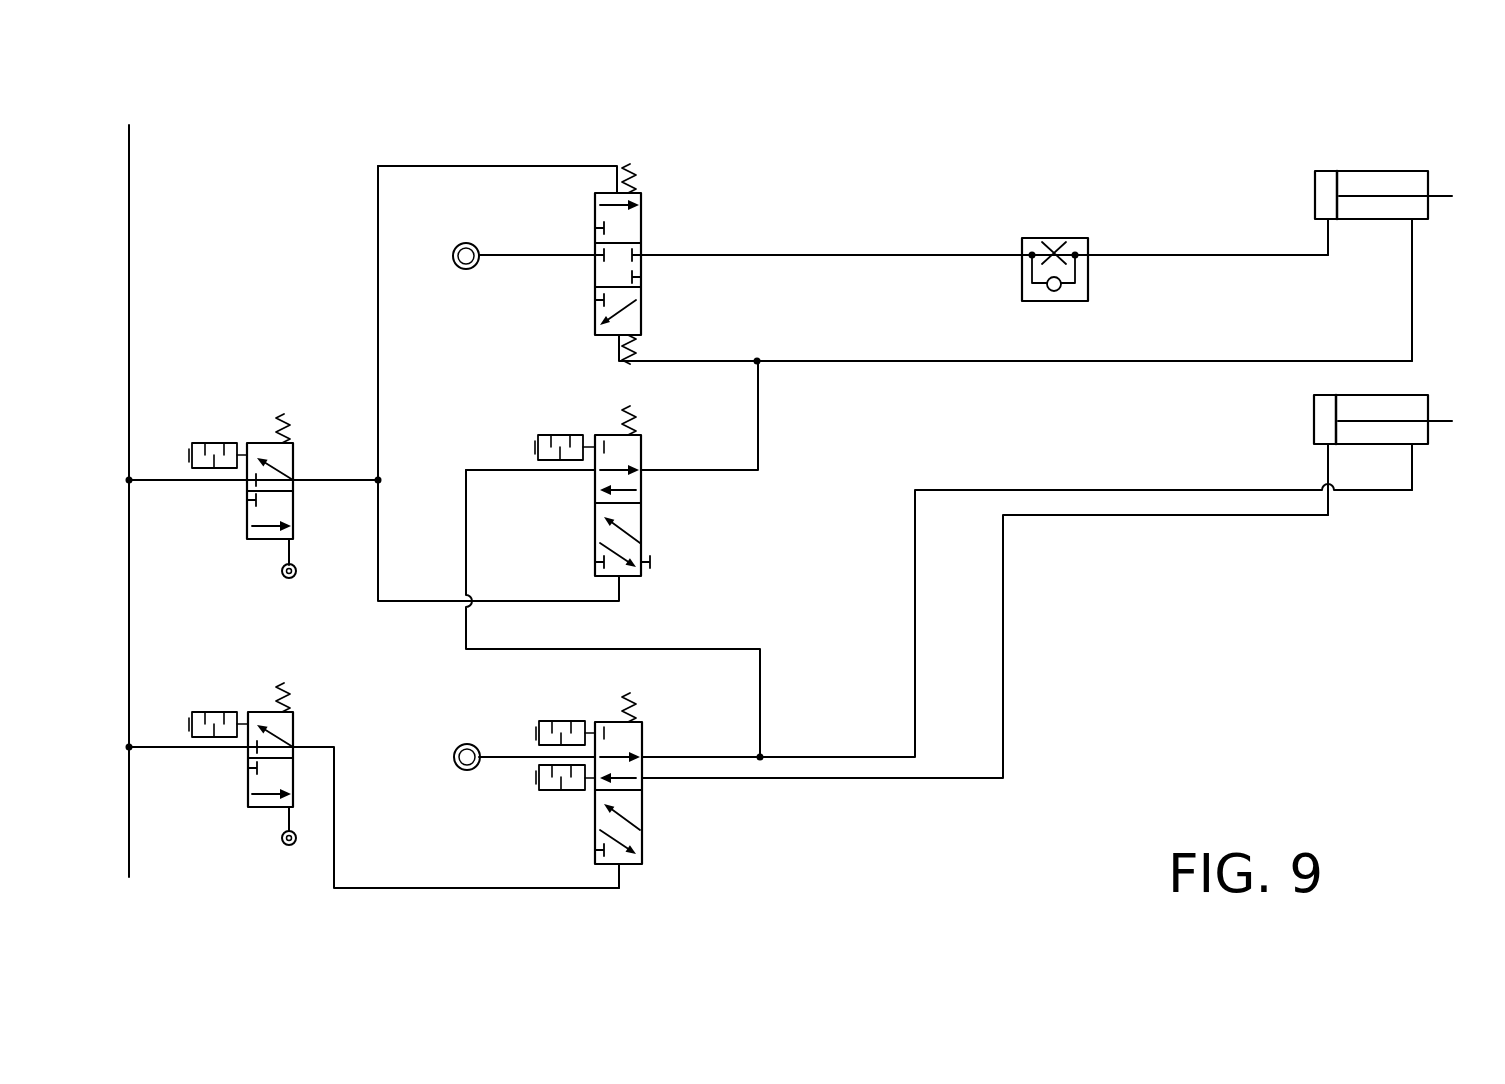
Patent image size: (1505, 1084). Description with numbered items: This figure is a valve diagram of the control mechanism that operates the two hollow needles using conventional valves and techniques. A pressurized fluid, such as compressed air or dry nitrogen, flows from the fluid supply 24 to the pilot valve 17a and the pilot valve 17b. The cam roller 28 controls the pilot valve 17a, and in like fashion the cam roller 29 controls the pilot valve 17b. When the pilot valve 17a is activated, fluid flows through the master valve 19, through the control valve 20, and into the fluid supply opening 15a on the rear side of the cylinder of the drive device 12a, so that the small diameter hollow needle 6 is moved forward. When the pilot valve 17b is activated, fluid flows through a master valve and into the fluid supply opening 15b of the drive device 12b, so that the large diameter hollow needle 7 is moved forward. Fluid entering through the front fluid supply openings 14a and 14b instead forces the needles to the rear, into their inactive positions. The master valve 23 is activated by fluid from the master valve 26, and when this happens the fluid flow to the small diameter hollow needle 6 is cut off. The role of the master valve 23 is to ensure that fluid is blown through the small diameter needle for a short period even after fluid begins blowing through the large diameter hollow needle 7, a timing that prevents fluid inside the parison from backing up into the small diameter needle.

The fluid supply 24 is at (134, 234).
The pilot valve 17a is at (287, 398).
The cam roller 28 is at (299, 572).
The pilot valve 17b is at (310, 727).
The cam roller 29 is at (283, 843).
The master valve 19 is at (646, 235).
The master valve 23 is at (648, 545).
The master valve 26 is at (649, 845).
The control valve 20 is at (1046, 206).
The drive device 12a is at (1367, 170).
The small diameter hollow needle 6 is at (1442, 193).
The fluid supply opening 15a is at (1316, 220).
The fluid supply opening 14a is at (1418, 226).
The drive device 12b is at (1418, 396).
The large diameter hollow needle 7 is at (1440, 420).
The fluid supply opening 15b is at (1316, 446).
The fluid supply opening 14b is at (1414, 448).